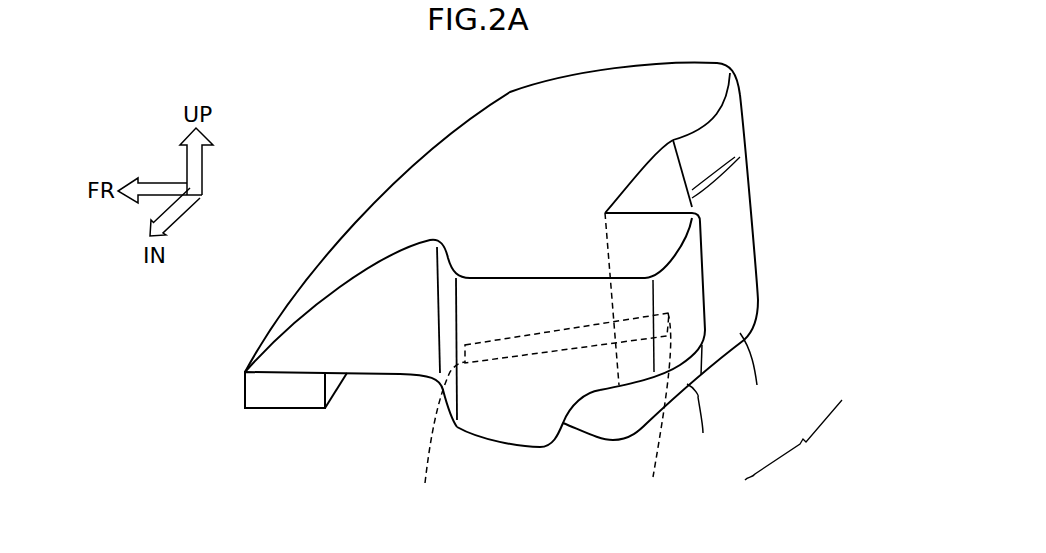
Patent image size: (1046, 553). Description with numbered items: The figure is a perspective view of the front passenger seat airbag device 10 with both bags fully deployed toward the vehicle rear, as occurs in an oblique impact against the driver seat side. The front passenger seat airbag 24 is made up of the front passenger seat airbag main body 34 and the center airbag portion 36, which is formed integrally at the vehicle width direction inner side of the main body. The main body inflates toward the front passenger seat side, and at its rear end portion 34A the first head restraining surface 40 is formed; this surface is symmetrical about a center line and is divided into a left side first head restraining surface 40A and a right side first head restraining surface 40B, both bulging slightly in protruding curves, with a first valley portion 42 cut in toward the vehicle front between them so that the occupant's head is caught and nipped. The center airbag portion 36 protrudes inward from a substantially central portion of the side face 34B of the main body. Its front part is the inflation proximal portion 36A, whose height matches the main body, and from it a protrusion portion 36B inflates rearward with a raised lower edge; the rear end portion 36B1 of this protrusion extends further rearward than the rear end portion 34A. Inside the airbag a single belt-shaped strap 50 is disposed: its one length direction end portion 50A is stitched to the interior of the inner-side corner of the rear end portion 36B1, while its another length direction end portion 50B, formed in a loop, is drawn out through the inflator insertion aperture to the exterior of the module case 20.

The front passenger seat airbag device 10 is at (203, 355).
The module case 20 is at (253, 408).
The front passenger seat airbag 24 is at (775, 85).
The front passenger seat airbag main body 34 is at (615, 67).
The rear end portion 34A is at (740, 205).
The side face 34B is at (363, 348).
The center airbag portion 36 is at (680, 305).
The inflation proximal portion 36A is at (490, 423).
The protrusion portion 36B is at (633, 368).
The rear end portion 36B1 is at (693, 278).
The first head restraining surface 40 is at (793, 440).
The left side first head restraining surface 40A is at (703, 433).
The right side first head restraining surface 40B is at (757, 385).
The first valley portion 42 is at (693, 168).
The strap 50 is at (525, 362).
The one length direction end portion 50A is at (654, 410).
The another length direction end portion 50B is at (429, 437).